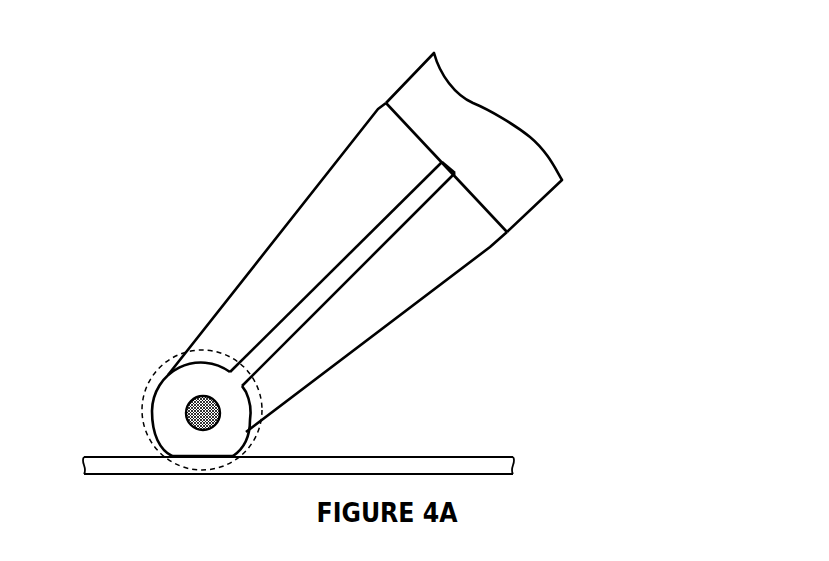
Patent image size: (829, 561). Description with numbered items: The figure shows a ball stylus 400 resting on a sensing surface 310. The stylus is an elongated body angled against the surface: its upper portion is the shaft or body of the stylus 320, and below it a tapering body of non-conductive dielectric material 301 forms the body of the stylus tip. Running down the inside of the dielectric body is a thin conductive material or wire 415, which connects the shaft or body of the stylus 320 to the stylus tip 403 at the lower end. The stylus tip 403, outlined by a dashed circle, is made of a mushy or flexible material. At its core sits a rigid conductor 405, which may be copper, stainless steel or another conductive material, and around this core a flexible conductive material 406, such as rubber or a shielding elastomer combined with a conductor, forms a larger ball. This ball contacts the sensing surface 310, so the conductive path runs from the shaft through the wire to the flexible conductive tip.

The ball stylus 400 is at (96, 128).
The non-conductive dielectric material 301 is at (287, 222).
The shaft or body of the stylus 320 is at (533, 170).
The thin conductive material or wire 415 is at (357, 273).
The stylus tip 403 is at (140, 410).
The rigid conductor 405 is at (195, 406).
The flexible conductive material 406 is at (243, 423).
The sensing surface 310 is at (512, 463).